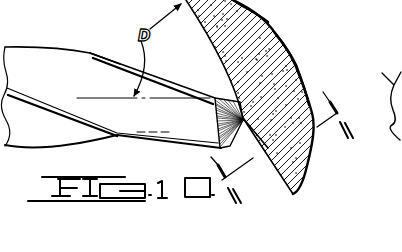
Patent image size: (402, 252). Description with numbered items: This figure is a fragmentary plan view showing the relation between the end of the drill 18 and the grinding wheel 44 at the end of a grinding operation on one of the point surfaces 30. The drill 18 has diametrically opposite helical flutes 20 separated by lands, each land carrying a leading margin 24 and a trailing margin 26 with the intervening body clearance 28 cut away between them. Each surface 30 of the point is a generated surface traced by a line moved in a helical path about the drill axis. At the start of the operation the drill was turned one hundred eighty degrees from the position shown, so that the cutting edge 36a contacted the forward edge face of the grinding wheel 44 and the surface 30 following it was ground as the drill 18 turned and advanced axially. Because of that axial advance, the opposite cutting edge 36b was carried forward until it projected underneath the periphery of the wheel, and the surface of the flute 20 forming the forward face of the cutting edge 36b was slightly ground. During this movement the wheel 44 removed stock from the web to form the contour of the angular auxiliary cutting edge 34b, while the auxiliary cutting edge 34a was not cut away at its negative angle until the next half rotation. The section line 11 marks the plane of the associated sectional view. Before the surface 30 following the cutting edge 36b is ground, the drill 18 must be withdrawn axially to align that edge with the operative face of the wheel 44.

The drill 18 is at (60, 45).
The flute 20 is at (180, 62).
The leading margin 24 is at (101, 119).
The trailing margin 26 is at (104, 61).
The body clearance 28 is at (91, 58).
The surface 30 is at (216, 121).
The auxiliary cutting edge 34a is at (299, 72).
The auxiliary cutting edge 34b is at (285, 50).
The cutting edge 36a is at (243, 128).
The cutting edge 36b is at (276, 25).
The grinding wheel 44 is at (292, 193).
The section line 11 is at (378, 109).